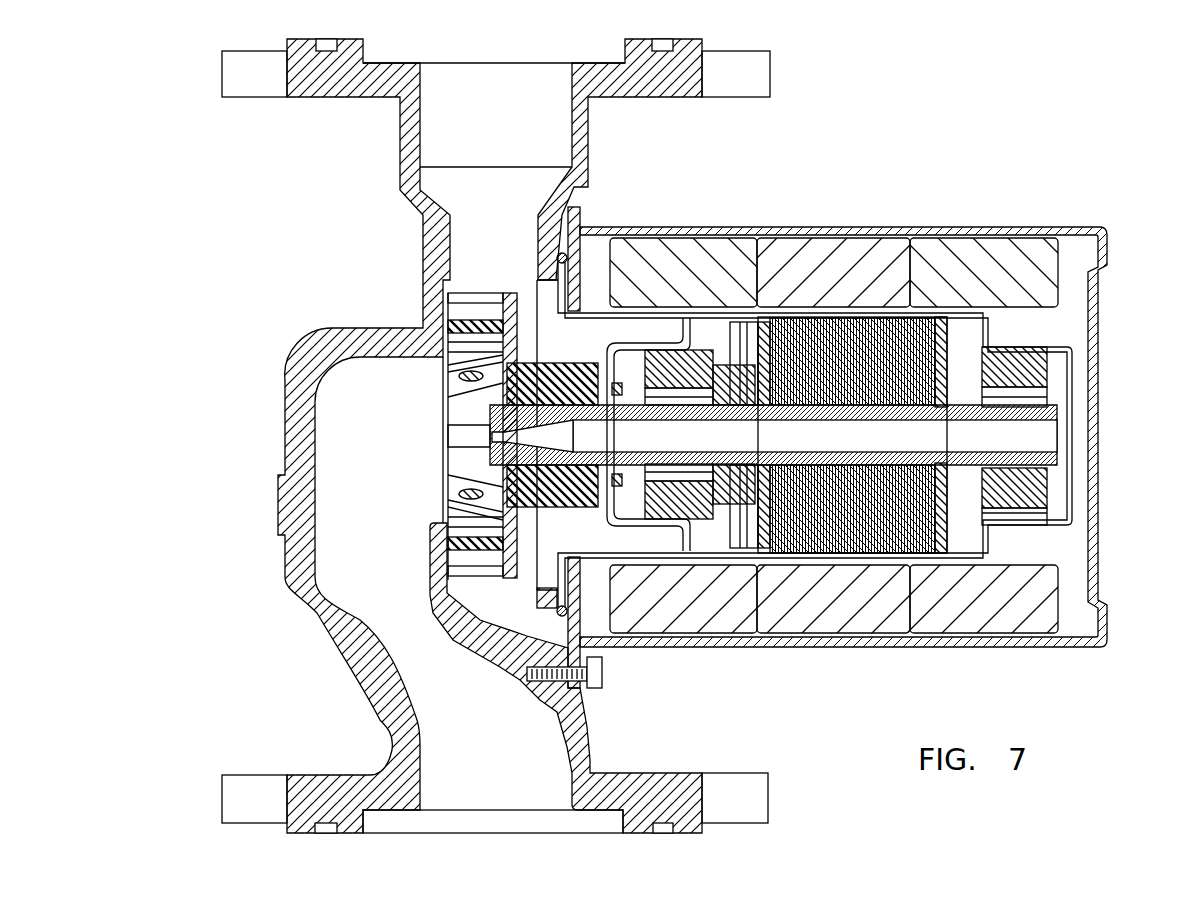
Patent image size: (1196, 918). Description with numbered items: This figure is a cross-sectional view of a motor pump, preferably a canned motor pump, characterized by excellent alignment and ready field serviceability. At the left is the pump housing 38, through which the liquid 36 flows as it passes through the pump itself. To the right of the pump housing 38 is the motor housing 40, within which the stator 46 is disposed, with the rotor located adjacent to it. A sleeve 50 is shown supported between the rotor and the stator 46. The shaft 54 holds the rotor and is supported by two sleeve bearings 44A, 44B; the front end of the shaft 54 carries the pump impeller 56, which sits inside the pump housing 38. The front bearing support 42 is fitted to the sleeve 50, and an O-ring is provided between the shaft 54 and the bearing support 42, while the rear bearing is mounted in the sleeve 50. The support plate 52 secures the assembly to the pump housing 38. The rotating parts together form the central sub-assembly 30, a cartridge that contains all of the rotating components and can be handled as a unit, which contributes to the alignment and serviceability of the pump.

The central sub-assembly 30 is at (1072, 396).
The liquid 36 is at (675, 436).
The pump housing 38 is at (270, 496).
The motor housing 40 is at (1000, 221).
The front bearing support 42 is at (645, 300).
The sleeve bearing 44A is at (683, 355).
The sleeve bearing 44B is at (1040, 505).
The stator 46 is at (824, 265).
The sleeve 50 is at (1025, 347).
The support plate 52 is at (577, 620).
The shaft 54 is at (1043, 497).
The pump impeller 56 is at (428, 396).